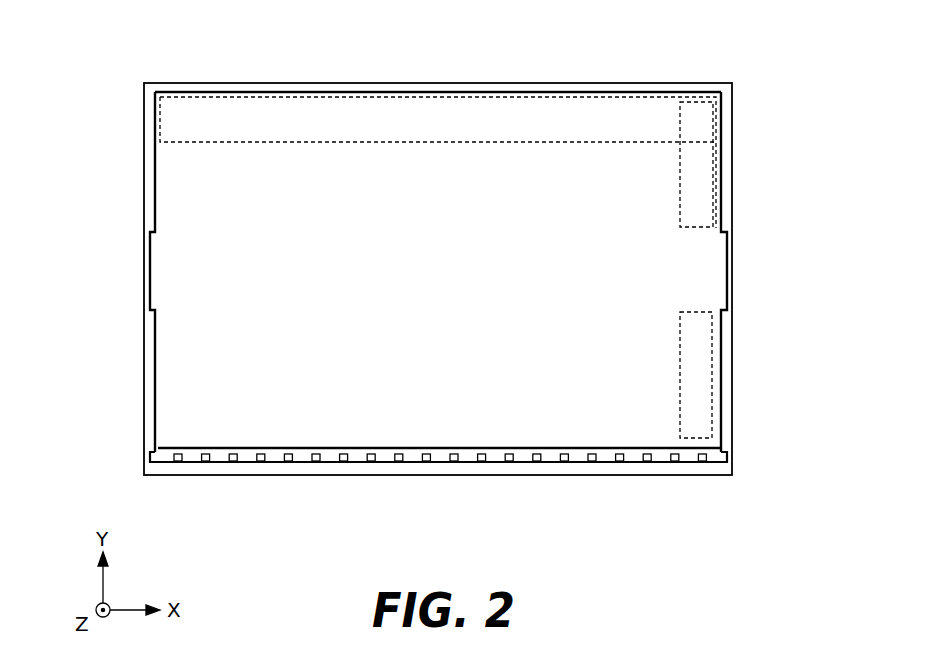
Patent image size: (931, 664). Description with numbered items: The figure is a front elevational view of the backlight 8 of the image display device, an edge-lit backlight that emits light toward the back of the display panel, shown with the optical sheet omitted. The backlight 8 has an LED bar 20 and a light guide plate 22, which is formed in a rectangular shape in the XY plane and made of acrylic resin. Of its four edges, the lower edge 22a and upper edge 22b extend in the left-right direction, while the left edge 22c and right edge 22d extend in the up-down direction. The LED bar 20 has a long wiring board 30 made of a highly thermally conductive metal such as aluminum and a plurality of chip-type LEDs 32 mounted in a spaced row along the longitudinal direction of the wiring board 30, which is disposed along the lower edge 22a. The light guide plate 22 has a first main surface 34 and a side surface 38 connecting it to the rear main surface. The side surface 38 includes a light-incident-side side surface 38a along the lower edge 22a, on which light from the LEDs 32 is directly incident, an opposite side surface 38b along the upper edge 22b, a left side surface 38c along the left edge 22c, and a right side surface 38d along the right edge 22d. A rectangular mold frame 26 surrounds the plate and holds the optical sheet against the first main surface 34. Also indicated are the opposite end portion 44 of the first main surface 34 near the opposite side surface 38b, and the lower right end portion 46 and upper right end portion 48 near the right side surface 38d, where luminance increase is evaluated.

The backlight 8 is at (768, 68).
The LED bar 20 is at (484, 507).
The light guide plate 22 is at (436, 283).
The lower edge 22a is at (470, 452).
The upper edge 22b is at (407, 88).
The left edge 22c is at (150, 368).
The right edge 22d is at (737, 302).
The mold frame 26 is at (145, 191).
The wiring board 30 is at (618, 463).
The LEDs 32 is at (646, 463).
The first main surface 34 is at (172, 328).
The side surface 38 is at (436, 283).
The light-incident-side side surface 38a is at (412, 449).
The opposite side surface 38b is at (471, 88).
The left side surface 38c is at (147, 296).
The right side surface 38d is at (737, 275).
The opposite end portion 44 is at (539, 98).
The lower right end portion 46 is at (712, 388).
The upper right end portion 48 is at (712, 175).